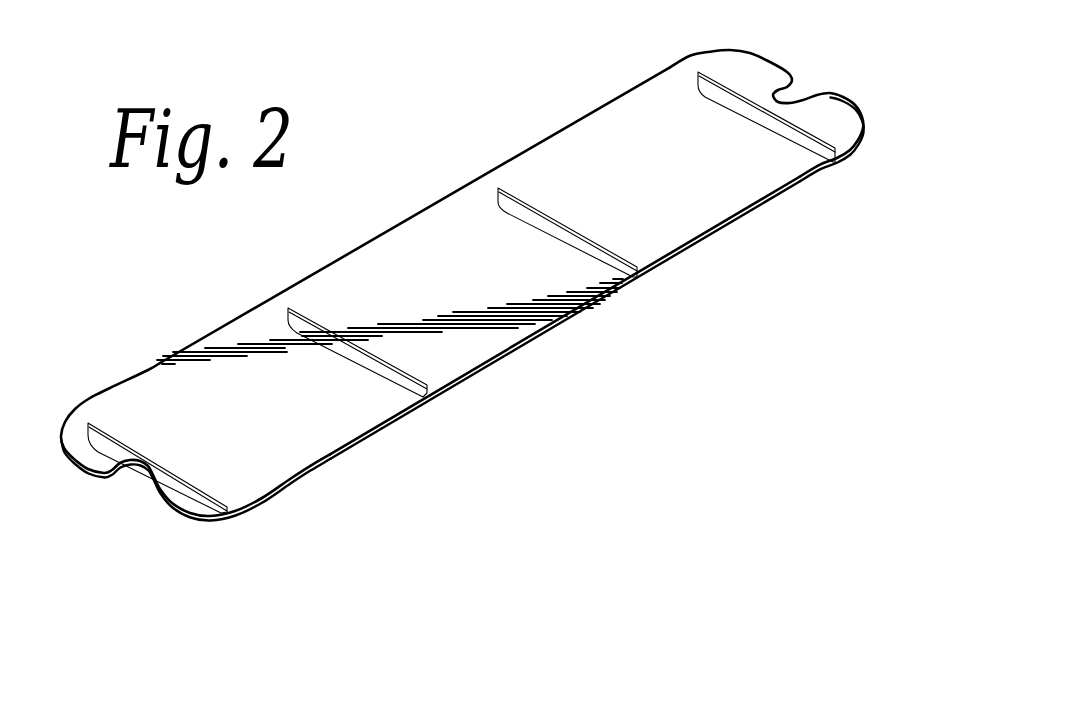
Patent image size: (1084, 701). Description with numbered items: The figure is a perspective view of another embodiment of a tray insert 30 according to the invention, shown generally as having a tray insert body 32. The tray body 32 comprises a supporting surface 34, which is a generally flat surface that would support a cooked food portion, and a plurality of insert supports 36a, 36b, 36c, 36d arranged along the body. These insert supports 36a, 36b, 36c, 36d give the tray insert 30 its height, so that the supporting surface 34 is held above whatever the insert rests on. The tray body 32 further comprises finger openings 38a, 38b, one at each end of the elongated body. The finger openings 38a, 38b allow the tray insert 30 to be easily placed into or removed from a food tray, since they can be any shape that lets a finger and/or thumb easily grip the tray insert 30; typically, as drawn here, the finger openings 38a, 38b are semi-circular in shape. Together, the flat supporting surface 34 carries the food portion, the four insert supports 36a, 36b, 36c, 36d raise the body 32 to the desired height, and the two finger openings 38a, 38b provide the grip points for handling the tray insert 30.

The tray insert 30 is at (464, 321).
The tray insert body 32 is at (462, 285).
The supporting surface 34 is at (679, 210).
The insert support 36a is at (180, 522).
The insert support 36b is at (386, 410).
The insert support 36c is at (592, 286).
The insert support 36d is at (792, 170).
The finger opening 38a is at (95, 508).
The finger opening 38b is at (831, 62).